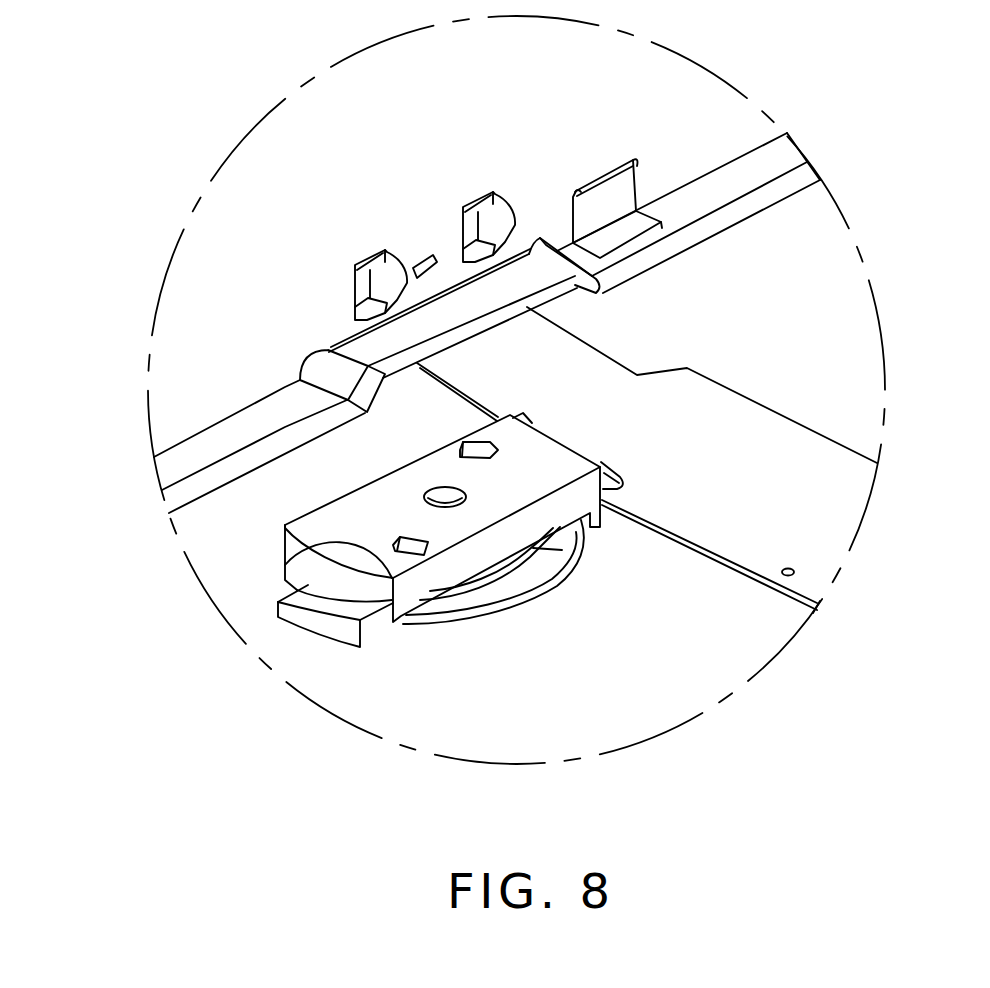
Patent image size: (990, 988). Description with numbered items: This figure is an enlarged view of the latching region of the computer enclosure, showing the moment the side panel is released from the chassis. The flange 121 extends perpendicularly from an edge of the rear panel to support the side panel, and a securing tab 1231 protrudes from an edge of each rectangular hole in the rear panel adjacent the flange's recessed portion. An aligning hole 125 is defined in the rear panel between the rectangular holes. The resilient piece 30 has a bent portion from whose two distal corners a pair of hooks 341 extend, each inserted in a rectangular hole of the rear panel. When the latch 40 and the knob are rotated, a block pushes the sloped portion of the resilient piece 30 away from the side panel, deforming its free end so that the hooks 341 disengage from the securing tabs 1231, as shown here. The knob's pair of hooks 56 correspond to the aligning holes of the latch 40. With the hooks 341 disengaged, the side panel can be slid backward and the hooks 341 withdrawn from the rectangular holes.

The flange 121 is at (783, 157).
The securing tab 1231 is at (302, 361).
The hooks 341 is at (372, 278).
The aligning hole 125 is at (425, 258).
The resilient piece 30 is at (828, 529).
The latch 40 is at (313, 523).
The hooks 56 is at (312, 524).